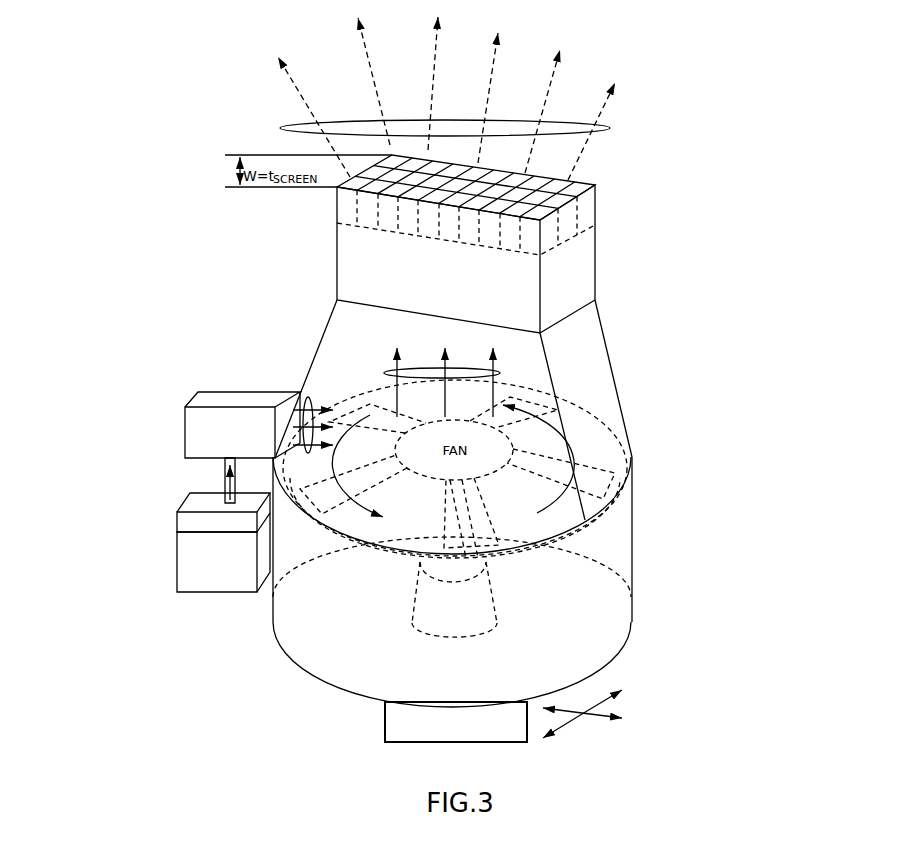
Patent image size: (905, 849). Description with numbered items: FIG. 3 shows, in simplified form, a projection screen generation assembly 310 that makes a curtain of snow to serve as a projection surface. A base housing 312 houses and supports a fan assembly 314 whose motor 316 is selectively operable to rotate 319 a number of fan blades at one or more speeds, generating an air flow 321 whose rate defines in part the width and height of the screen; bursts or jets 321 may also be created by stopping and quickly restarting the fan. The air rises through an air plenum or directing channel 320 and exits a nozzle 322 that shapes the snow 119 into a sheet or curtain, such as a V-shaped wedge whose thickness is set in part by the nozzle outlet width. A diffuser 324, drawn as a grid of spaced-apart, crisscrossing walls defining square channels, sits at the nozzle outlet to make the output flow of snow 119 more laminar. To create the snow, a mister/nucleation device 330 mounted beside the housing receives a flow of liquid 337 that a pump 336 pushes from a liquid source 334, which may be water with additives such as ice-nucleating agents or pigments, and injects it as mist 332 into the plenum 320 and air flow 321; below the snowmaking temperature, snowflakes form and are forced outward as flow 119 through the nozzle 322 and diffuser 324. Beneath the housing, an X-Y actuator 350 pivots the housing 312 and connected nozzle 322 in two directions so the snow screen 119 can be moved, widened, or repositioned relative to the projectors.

The output snow 119 is at (608, 130).
The projection screen generation assembly 310 is at (692, 318).
The base housing 312 is at (634, 531).
The fan assembly 314 is at (380, 578).
The motor 316 is at (492, 597).
The rotation of fan blades 319 is at (530, 409).
The air plenum 320 is at (614, 386).
The air flow 321 is at (390, 375).
The nozzle 322 is at (597, 288).
The diffuser 324 is at (597, 226).
The mister/nucleation device 330 is at (220, 392).
The mist 332 is at (308, 396).
The liquid source 334 is at (177, 556).
The pump 336 is at (179, 514).
The flow of liquid 337 is at (224, 484).
The X-Y actuator 350 is at (383, 716).